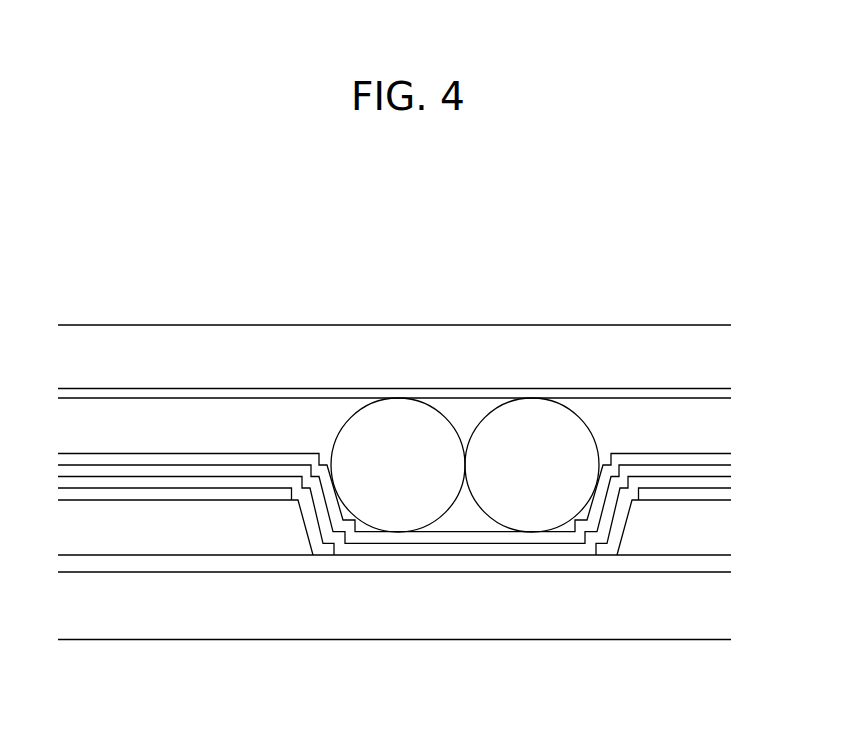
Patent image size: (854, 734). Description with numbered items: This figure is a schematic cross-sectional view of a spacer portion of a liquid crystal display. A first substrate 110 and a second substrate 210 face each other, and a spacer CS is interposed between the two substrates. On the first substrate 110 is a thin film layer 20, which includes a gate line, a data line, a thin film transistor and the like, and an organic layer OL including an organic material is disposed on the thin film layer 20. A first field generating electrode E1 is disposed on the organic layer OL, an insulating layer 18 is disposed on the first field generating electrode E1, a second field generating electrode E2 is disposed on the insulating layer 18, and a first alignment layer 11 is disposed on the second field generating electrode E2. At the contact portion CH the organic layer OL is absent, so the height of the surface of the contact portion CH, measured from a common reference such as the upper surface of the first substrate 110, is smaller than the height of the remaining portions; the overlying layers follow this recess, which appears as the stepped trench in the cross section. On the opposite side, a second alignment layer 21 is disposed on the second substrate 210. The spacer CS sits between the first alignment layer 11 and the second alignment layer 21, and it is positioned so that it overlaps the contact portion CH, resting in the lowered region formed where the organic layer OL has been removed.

The second alignment layer 21 is at (145, 393).
The second substrate 210 is at (273, 353).
The spacer CS is at (392, 435).
The insulating layer 18 is at (672, 488).
The first alignment layer 11 is at (89, 458).
The first field generating electrode E1 is at (202, 494).
The organic layer OL is at (266, 530).
The thin film layer 20 is at (352, 565).
The second field generating electrode E2 is at (436, 548).
The contact portion CH is at (463, 508).
The first substrate 110 is at (587, 606).